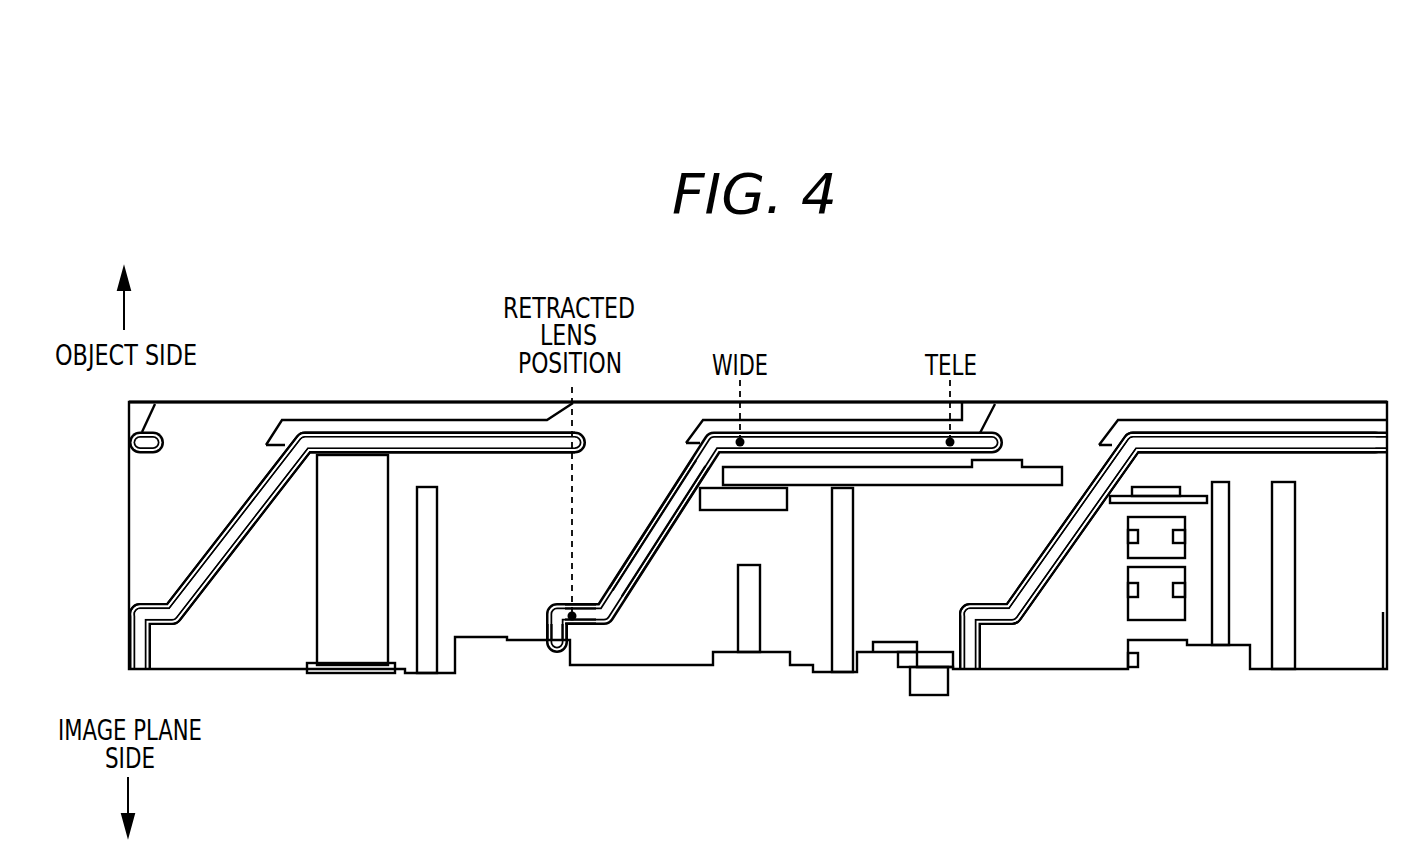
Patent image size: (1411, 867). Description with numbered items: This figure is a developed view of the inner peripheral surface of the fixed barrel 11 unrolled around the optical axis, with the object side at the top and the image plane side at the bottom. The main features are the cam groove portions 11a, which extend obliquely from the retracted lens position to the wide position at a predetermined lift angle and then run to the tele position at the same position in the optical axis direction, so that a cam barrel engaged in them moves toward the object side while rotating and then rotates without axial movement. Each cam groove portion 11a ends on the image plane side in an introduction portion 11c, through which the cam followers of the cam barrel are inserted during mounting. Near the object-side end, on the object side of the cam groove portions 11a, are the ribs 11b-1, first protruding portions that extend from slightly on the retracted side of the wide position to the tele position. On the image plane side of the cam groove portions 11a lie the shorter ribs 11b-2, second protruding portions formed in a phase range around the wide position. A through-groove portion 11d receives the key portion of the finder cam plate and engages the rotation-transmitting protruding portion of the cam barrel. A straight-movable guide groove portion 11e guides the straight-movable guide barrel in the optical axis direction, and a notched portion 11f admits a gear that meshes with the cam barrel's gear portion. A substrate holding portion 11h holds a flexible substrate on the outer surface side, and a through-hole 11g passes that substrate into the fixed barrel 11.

The fixed barrel 11 is at (1305, 412).
The cam groove portion 11a is at (622, 572).
The rib 11b-1 is at (394, 428).
The rib 11b-2 is at (767, 500).
The introduction portion 11c is at (556, 630).
The through-groove portion 11d is at (1007, 470).
The straight-movable guide groove portion 11e is at (428, 648).
The notched portion 11f is at (345, 632).
The through-hole 11g is at (1193, 498).
The substrate holding portion 11h is at (1158, 597).